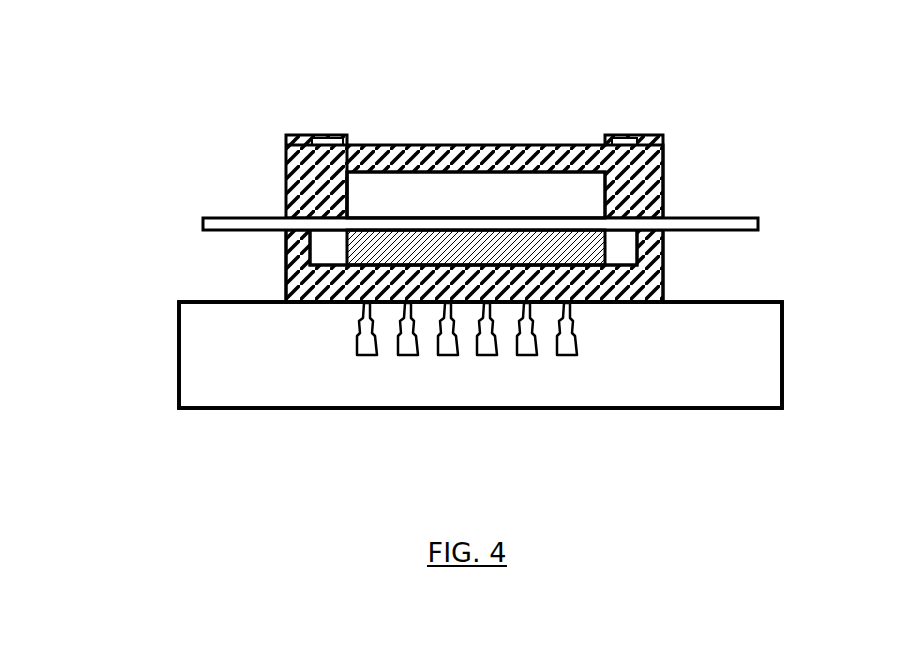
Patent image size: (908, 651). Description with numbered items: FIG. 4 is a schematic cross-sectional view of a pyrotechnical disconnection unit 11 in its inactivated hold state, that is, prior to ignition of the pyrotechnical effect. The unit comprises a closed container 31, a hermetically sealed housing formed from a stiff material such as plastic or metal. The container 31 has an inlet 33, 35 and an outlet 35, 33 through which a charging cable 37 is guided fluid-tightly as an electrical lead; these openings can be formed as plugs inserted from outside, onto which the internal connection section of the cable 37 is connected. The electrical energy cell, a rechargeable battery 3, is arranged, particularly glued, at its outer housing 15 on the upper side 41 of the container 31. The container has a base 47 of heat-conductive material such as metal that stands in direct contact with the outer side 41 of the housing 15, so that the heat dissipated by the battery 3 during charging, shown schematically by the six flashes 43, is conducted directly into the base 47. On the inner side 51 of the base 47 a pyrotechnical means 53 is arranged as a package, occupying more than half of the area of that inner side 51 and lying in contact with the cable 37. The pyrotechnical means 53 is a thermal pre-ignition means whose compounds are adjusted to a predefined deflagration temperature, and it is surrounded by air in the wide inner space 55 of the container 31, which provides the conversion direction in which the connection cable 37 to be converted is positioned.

The rechargeable battery 3 is at (271, 370).
The pyrotechnical disconnection unit 11 is at (763, 170).
The outer housing 15 is at (783, 344).
The container 31 is at (658, 118).
The inlet/outlet 33 is at (665, 217).
The inlet/outlet 35 is at (287, 222).
The charging cable 37 is at (213, 225).
The upper side 41 is at (197, 301).
The flashes 43 is at (444, 354).
The base 47 is at (317, 302).
The inner side 51 is at (287, 247).
The pyrotechnical means 53 is at (478, 240).
The inner space 55 is at (560, 207).